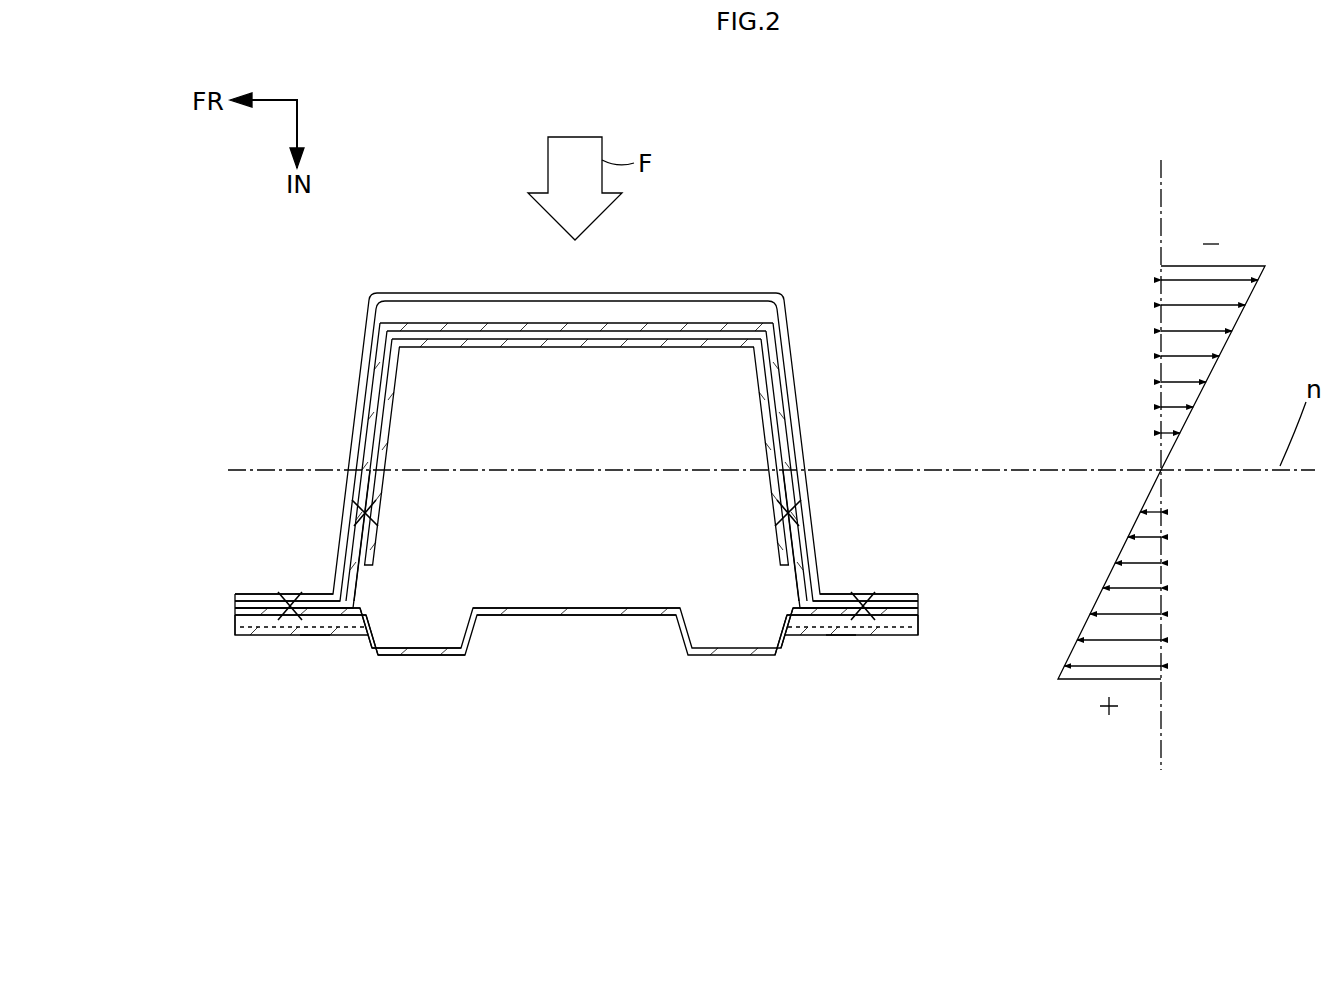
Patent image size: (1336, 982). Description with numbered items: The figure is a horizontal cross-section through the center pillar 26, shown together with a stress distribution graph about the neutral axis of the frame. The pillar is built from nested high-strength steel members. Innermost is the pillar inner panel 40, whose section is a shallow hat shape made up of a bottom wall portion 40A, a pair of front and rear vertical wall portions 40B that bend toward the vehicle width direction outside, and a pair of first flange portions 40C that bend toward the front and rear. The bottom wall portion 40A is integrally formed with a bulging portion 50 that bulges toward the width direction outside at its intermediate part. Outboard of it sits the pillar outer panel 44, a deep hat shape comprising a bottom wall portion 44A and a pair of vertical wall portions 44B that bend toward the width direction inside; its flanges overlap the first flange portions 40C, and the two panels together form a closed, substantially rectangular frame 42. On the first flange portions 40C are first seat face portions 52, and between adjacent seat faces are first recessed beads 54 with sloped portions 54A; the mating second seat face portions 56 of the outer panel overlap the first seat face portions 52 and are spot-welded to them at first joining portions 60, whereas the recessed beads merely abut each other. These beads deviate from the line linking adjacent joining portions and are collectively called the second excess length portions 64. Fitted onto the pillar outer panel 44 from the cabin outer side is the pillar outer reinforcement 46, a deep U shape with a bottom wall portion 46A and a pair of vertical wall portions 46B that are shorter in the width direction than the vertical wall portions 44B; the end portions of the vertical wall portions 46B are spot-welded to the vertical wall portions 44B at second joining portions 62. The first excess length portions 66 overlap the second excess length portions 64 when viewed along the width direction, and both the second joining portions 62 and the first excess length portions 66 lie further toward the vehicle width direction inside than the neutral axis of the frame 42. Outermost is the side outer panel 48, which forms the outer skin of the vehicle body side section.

The center pillar 26 is at (806, 250).
The pillar inner panel 40 is at (712, 658).
The bottom wall portion 40A is at (418, 657).
The vertical wall portions 40B is at (352, 646).
The first flange portions 40C is at (233, 626).
The frame 42 is at (535, 617).
The pillar outer panel 44 is at (577, 402).
The bottom wall portion 44A is at (530, 349).
The vertical wall portions 44B is at (389, 428).
The pillar outer reinforcement 46 is at (576, 423).
The bottom wall portion 46A is at (466, 322).
The vertical wall portions 46B is at (366, 418).
The side outer panel 48 is at (675, 292).
The bulging portion 50 is at (596, 606).
The first seat face portions 52 is at (262, 637).
The first recessed beads 54 is at (594, 683).
The sloped portions 54A is at (248, 638).
The second seat face portions 56 is at (252, 593).
The first joining portions 60 is at (292, 598).
The second joining portions 62 is at (360, 512).
The second excess length portions 64 is at (313, 639).
The first excess length portions 66 is at (354, 532).